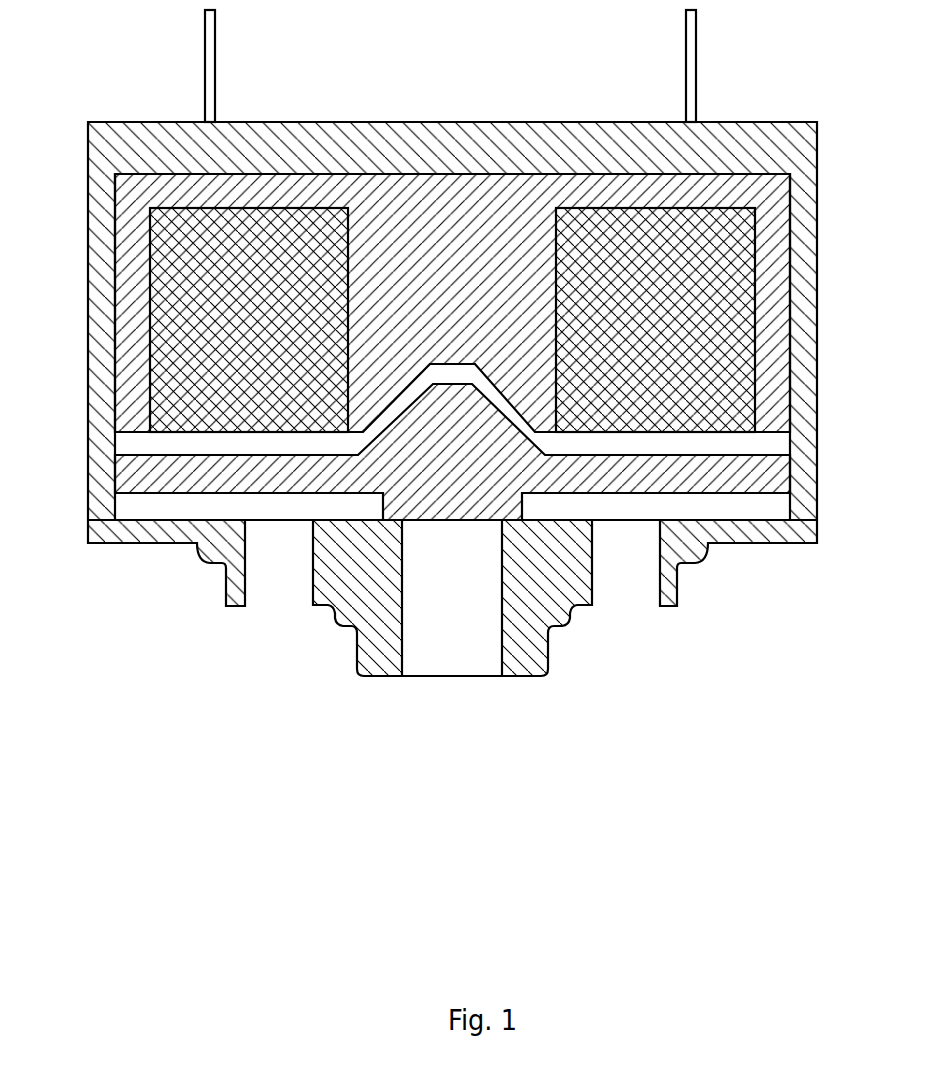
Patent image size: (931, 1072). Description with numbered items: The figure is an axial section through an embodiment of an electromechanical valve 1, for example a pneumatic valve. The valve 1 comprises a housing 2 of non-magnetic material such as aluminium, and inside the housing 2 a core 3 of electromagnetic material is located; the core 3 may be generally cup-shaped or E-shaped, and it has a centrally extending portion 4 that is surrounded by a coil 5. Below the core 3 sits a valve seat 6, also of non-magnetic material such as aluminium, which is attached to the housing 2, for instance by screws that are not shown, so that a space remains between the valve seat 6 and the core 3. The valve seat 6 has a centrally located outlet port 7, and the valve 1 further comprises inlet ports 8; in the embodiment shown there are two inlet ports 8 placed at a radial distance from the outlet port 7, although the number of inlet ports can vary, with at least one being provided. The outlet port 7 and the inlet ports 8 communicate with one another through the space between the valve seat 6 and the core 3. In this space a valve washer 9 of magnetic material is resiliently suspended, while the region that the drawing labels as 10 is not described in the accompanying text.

The electromechanical valve 1 is at (233, 704).
The housing 2 is at (153, 133).
The core 3 is at (383, 207).
The centrally extending portion 4 is at (465, 330).
The coil 5 is at (693, 290).
The valve seat 6 is at (567, 593).
The outlet port 7 is at (450, 643).
The inlet port 8 is at (276, 592).
The valve washer 9 is at (497, 468).
The air gap 10 is at (663, 447).